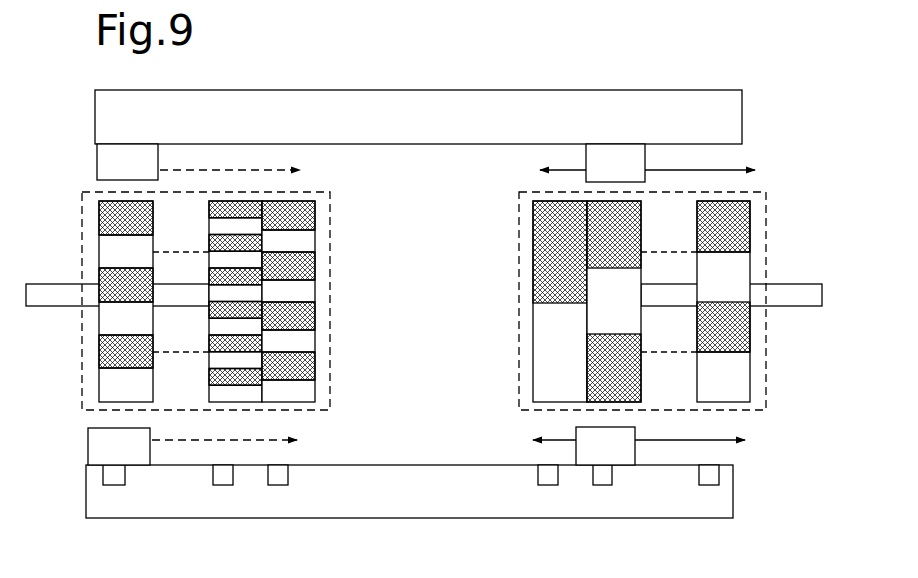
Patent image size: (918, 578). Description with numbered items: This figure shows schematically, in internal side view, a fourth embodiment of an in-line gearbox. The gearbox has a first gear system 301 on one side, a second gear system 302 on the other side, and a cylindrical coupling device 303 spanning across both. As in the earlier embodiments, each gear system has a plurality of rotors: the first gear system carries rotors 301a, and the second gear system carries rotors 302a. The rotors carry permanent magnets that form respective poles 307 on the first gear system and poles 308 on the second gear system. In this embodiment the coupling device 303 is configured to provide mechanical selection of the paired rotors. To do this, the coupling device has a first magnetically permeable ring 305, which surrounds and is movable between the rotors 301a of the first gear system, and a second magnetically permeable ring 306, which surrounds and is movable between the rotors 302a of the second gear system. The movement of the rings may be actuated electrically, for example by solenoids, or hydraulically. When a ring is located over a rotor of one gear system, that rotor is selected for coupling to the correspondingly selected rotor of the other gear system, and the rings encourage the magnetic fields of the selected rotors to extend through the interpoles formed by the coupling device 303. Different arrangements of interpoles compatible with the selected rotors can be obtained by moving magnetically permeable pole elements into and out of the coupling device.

The cylindrical coupling device 303 is at (430, 90).
The poles 308 is at (97, 193).
The poles 307 is at (115, 257).
The first gear system 301 is at (214, 321).
The rotors of the first gear system 301a is at (292, 395).
The second gear system 302 is at (683, 320).
The rotors of the second gear system 302a is at (728, 388).
The first magnetically permeable ring 305 is at (98, 451).
The second magnetically permeable ring 306 is at (613, 452).